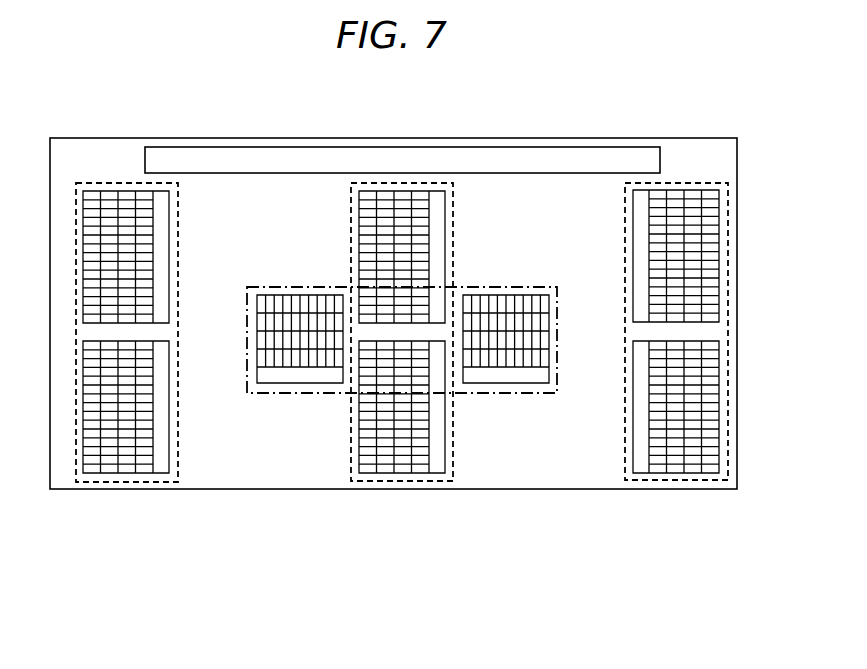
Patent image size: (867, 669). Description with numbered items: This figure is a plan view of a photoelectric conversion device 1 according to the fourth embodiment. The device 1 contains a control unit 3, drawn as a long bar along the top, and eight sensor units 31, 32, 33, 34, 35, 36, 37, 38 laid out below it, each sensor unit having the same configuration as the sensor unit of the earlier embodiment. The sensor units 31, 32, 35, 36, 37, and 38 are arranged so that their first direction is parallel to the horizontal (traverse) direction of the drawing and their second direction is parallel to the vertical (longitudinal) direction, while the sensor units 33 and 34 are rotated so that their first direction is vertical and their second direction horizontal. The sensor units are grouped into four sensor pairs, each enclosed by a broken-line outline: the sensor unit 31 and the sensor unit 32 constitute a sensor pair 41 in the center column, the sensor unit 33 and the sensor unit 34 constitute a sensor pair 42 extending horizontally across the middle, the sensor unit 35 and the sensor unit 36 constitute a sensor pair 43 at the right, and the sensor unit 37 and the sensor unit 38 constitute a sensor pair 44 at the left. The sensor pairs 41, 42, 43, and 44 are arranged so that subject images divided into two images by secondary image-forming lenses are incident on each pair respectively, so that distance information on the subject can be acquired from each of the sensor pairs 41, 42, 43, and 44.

The photoelectric conversion device 1 is at (137, 138).
The control unit 3 is at (540, 153).
The sensor unit 31 is at (358, 230).
The sensor unit 32 is at (358, 426).
The sensor unit 33 is at (278, 294).
The sensor unit 34 is at (507, 294).
The sensor unit 35 is at (633, 235).
The sensor unit 36 is at (633, 431).
The sensor unit 37 is at (169, 225).
The sensor unit 38 is at (169, 420).
The sensor pair 41 is at (406, 484).
The sensor pair 42 is at (511, 396).
The sensor pair 43 is at (681, 483).
The sensor pair 44 is at (131, 484).